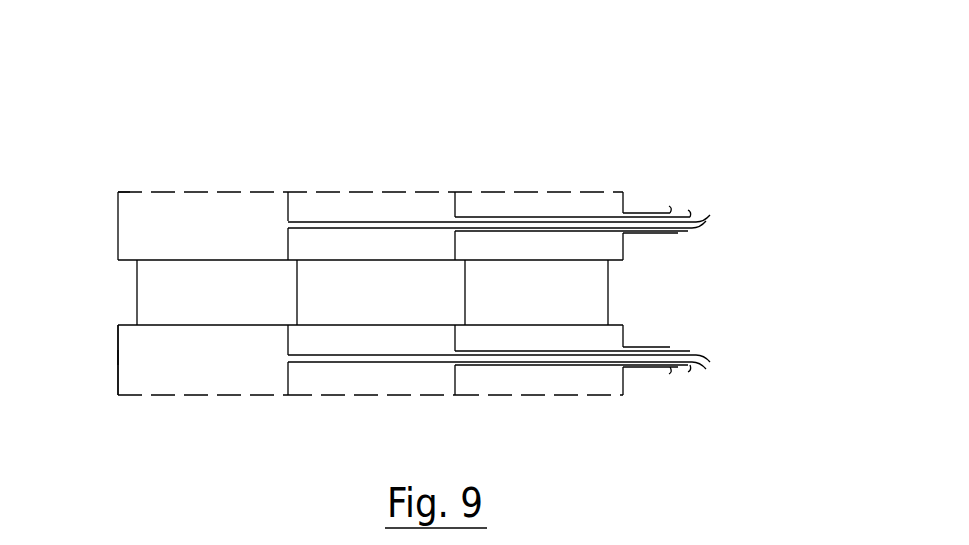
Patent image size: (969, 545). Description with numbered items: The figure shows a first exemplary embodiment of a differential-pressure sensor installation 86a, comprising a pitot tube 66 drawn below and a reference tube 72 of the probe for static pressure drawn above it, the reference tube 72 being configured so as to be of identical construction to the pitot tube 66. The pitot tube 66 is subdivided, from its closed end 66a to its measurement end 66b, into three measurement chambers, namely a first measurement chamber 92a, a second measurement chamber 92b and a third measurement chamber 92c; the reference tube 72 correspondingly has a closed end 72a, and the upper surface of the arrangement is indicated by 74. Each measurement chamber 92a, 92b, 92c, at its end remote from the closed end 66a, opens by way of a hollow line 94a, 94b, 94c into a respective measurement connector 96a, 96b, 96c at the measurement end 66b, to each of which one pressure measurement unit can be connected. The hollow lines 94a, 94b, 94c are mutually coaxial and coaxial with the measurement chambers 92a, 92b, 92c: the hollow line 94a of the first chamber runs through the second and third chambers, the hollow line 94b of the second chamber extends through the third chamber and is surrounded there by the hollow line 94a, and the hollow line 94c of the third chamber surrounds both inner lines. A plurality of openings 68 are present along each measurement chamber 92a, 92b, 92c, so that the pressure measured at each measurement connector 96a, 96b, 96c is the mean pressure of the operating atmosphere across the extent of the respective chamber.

The pitot tube 66 is at (110, 381).
The closed end 66a is at (116, 357).
The measurement end 66b is at (645, 384).
The openings 68 is at (145, 398).
The reference tube 72 is at (110, 227).
The closed end of reference tube 72a is at (117, 203).
The top surface 74 is at (208, 192).
The differential-pressure sensor installation 86a is at (158, 97).
The first measurement chamber 92a is at (178, 208).
The second measurement chamber 92b is at (311, 192).
The third measurement chamber 92c is at (486, 192).
The hollow line of first measurement chamber 94a is at (360, 222).
The hollow line of second measurement chamber 94b is at (535, 218).
The hollow line of third measurement chamber 94c is at (641, 213).
The first measurement connector 96a is at (712, 218).
The second measurement connector 96b is at (690, 214).
The third measurement connector 96c is at (670, 212).